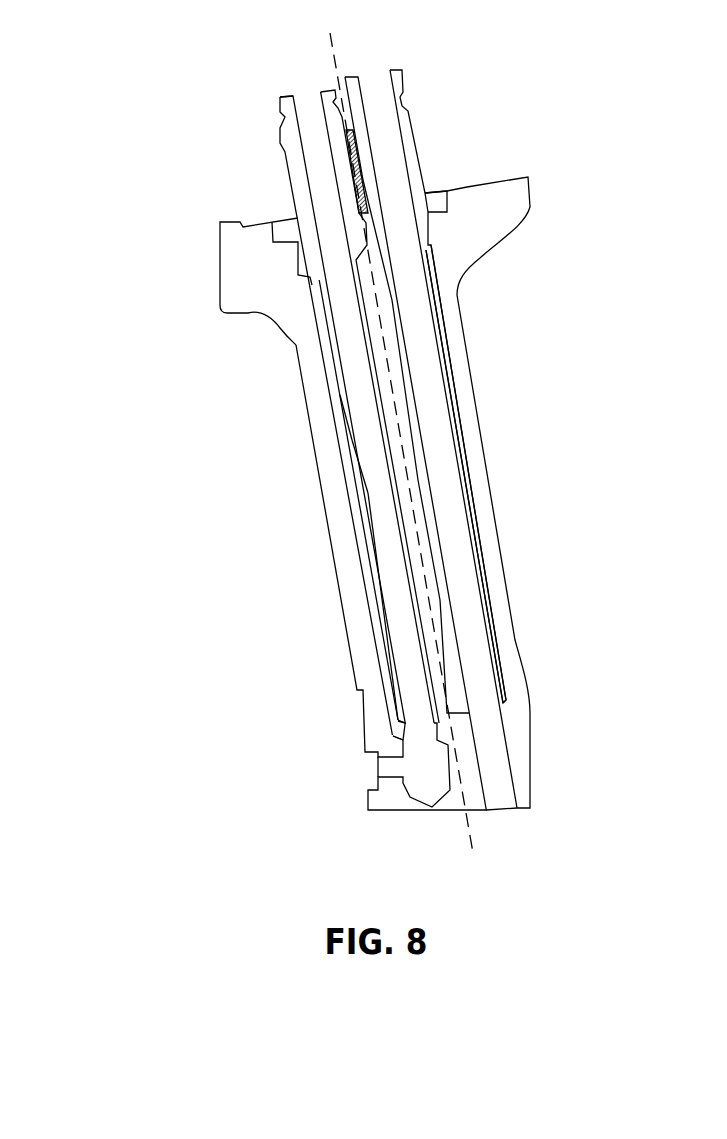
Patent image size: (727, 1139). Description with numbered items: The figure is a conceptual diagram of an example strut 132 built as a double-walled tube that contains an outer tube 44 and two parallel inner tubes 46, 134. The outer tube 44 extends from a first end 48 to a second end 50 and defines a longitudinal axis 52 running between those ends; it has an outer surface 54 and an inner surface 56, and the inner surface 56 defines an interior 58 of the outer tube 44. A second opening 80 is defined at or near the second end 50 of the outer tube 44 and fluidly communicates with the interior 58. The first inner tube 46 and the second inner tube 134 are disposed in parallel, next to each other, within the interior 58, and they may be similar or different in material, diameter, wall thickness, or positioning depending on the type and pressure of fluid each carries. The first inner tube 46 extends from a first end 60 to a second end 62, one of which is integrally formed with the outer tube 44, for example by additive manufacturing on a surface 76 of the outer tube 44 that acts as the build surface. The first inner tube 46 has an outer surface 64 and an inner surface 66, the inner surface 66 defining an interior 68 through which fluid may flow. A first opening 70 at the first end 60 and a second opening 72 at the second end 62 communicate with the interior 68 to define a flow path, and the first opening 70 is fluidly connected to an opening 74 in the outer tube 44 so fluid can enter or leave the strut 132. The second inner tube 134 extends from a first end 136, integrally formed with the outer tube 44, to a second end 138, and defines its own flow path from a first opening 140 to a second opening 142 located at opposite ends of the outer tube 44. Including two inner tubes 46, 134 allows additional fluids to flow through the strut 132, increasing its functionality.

The strut 132 is at (125, 215).
The outer tube 44 is at (338, 540).
The inner tube 46 is at (385, 640).
The first end 48 is at (390, 812).
The second end 50 is at (470, 187).
The longitudinal axis 52 is at (411, 492).
The outer surface 54 is at (493, 510).
The inner surface 56 is at (462, 410).
The interior 58 is at (410, 364).
The first end 60 is at (392, 720).
The second end 62 is at (290, 152).
The outer surface 64 is at (340, 395).
The inner surface 66 is at (352, 440).
The interior 68 is at (357, 488).
The first opening 70 is at (398, 744).
The second opening 72 is at (297, 90).
The opening 74 is at (363, 773).
The surface 76 is at (403, 718).
The second opening 80 is at (438, 179).
The second inner tube 134 is at (480, 570).
The first end 136 is at (503, 695).
The second end 138 is at (408, 110).
The first opening 140 is at (509, 818).
The second opening 142 is at (376, 66).